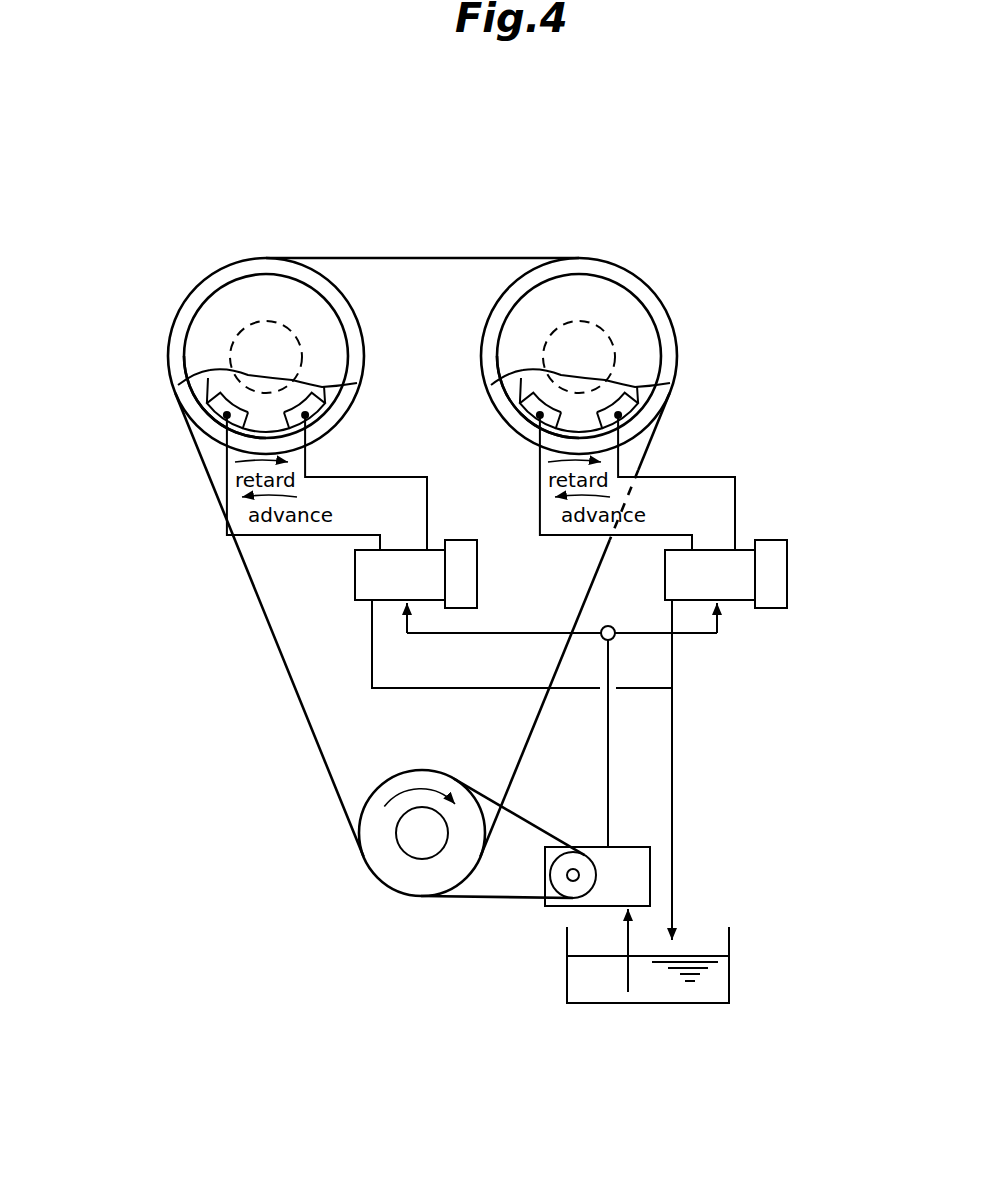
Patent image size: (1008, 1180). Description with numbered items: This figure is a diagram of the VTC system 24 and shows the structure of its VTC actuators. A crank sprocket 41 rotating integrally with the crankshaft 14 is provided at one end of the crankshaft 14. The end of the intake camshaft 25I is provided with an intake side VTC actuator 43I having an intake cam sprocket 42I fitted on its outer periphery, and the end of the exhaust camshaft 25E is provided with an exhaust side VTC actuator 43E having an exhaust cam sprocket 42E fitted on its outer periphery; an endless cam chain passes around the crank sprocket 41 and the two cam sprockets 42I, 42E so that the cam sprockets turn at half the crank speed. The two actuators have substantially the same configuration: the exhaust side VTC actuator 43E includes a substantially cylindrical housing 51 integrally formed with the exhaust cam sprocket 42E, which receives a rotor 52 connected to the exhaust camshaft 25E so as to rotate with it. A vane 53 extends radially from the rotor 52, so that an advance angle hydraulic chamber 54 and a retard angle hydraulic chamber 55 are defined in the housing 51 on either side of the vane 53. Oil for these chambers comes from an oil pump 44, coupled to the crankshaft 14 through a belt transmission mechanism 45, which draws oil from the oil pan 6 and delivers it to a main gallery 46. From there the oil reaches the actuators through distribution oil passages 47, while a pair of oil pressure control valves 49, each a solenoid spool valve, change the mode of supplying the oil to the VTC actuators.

The VTC system 24 is at (433, 207).
The exhaust cam sprocket 42E is at (225, 277).
The exhaust camshaft 25E is at (284, 327).
The exhaust side VTC actuator 43E is at (180, 299).
The intake cam sprocket 42I is at (540, 277).
The intake camshaft 25I is at (602, 328).
The intake side VTC actuator 43I is at (643, 280).
The housing 51 is at (192, 395).
The rotor 52 is at (302, 387).
The vane 53 is at (268, 424).
The advance angle hydraulic chamber 54 is at (318, 412).
The retard angle hydraulic chamber 55 is at (218, 416).
The oil pressure control valve 49 is at (459, 536).
The distribution oil passage 47 is at (408, 624).
The main gallery 46 is at (612, 625).
The crank sprocket 41 is at (414, 778).
The crankshaft 14 is at (415, 846).
The oil pump 44 is at (632, 844).
The belt transmission mechanism 45 is at (502, 900).
The oil pan 6 is at (731, 939).